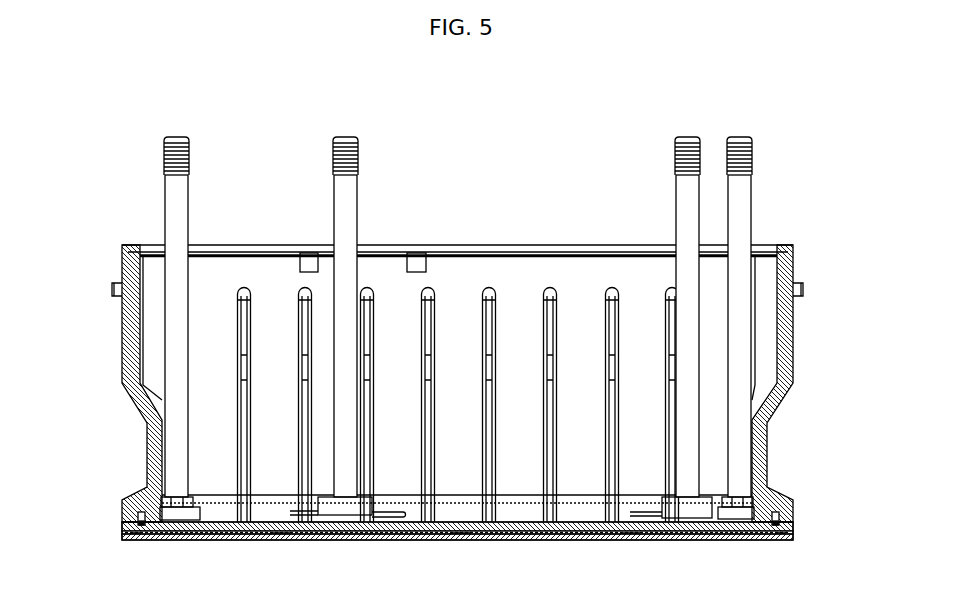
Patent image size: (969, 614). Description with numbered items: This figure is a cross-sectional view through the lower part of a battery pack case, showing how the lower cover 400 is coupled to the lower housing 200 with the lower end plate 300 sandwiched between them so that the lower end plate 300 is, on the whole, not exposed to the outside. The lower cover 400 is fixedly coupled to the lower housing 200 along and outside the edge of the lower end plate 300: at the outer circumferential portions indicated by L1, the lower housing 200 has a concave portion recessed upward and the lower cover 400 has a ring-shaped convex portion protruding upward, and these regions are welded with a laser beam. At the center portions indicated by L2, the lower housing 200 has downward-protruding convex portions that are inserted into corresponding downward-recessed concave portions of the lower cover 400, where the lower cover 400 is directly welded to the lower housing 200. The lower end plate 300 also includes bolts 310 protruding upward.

The bolt 310 is at (333, 190).
The lower housing 200 is at (590, 525).
The lower end plate 300 is at (545, 535).
The lower cover 400 is at (513, 537).
The outer circumferential portions L1 is at (785, 533).
The center portions L2 is at (631, 539).